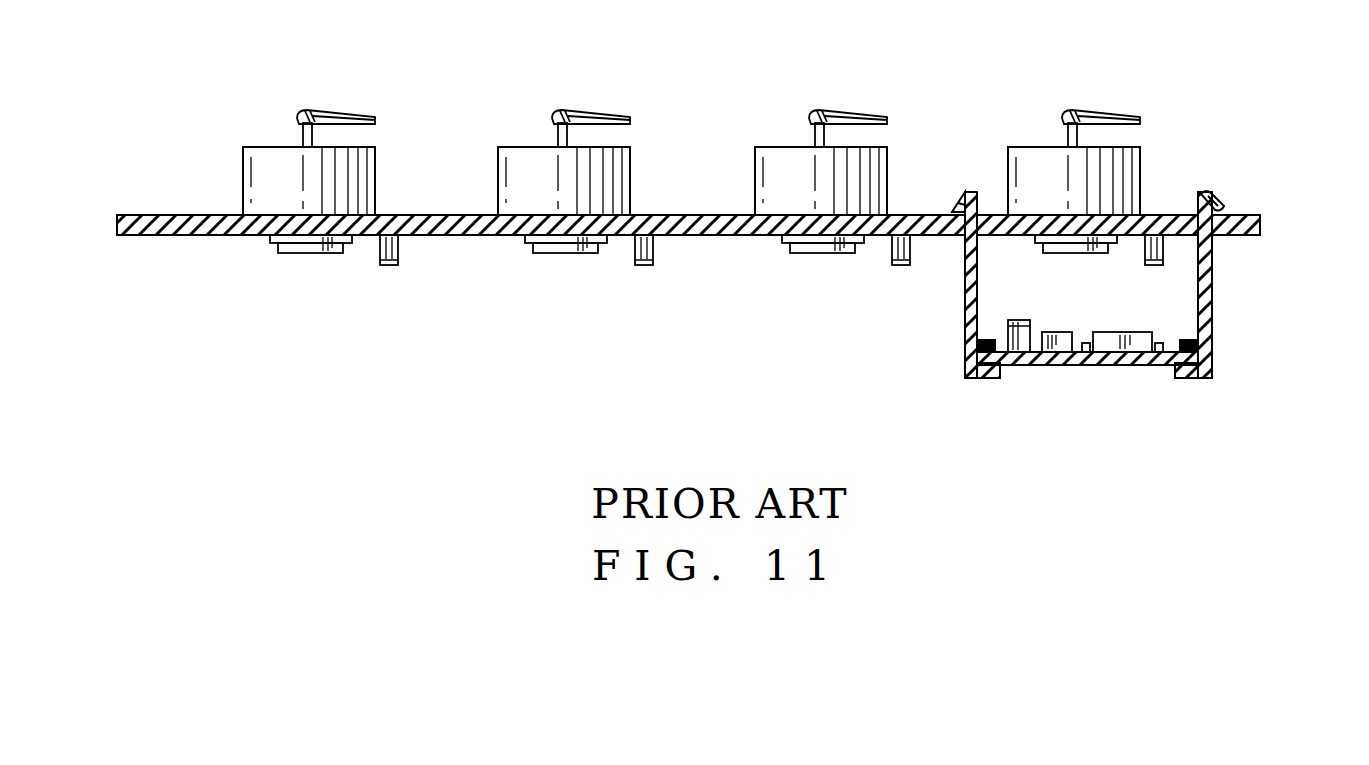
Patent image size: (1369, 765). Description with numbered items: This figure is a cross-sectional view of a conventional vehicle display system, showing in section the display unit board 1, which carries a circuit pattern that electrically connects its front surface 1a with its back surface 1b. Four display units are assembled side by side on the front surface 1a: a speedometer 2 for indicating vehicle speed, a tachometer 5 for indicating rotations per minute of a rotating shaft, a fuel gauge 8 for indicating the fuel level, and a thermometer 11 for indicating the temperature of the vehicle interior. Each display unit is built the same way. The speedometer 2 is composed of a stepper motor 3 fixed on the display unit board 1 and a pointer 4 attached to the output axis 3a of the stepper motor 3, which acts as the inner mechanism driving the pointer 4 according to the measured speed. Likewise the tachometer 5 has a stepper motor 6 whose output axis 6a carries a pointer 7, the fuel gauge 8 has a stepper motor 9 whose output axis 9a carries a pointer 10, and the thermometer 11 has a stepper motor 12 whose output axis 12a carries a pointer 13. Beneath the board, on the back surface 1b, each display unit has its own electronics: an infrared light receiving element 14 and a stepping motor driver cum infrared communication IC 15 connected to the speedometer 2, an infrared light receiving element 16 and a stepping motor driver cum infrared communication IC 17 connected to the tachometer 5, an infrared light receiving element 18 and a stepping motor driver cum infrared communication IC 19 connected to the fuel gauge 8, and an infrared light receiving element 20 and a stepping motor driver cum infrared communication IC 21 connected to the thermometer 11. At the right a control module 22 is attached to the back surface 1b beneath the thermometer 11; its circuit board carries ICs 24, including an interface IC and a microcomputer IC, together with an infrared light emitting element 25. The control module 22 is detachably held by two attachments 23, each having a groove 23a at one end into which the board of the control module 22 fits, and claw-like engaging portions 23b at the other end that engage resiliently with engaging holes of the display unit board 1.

The display unit board 1 is at (172, 212).
The front surface 1a is at (140, 214).
The back surface 1b is at (140, 237).
The speedometer 2 is at (311, 121).
The stepper motor 3 is at (243, 173).
The output axis 3a is at (313, 136).
The pointer 4 is at (340, 113).
The tachometer 5 is at (567, 120).
The stepper motor 6 is at (498, 175).
The output axis 6a is at (568, 133).
The pointer 7 is at (597, 112).
The fuel gauge 8 is at (831, 120).
The stepper motor 9 is at (755, 182).
The output axis 9a is at (825, 132).
The pointer 10 is at (840, 110).
The thermometer 11 is at (1093, 121).
The stepper motor 12 is at (1007, 162).
The output axis 12a is at (1078, 130).
The pointer 13 is at (1107, 110).
The infrared light receiving element 14 is at (389, 266).
The stepping motor driver cum infrared communication IC 15 is at (308, 254).
The infrared light receiving element 16 is at (645, 266).
The stepping motor driver cum infrared communication IC 17 is at (563, 251).
The infrared light receiving element 18 is at (893, 250).
The stepping motor driver cum infrared communication IC 19 is at (810, 240).
The infrared light receiving element 20 is at (1165, 247).
The stepping motor driver cum infrared communication IC 21 is at (1073, 241).
The control module 22 is at (1137, 367).
The attachment 23 is at (1101, 302).
The groove 23a is at (982, 379).
The claw-like engaging portion 23b is at (963, 198).
The ICs 24 is at (1097, 352).
The infrared light emitting element 25 is at (1017, 320).